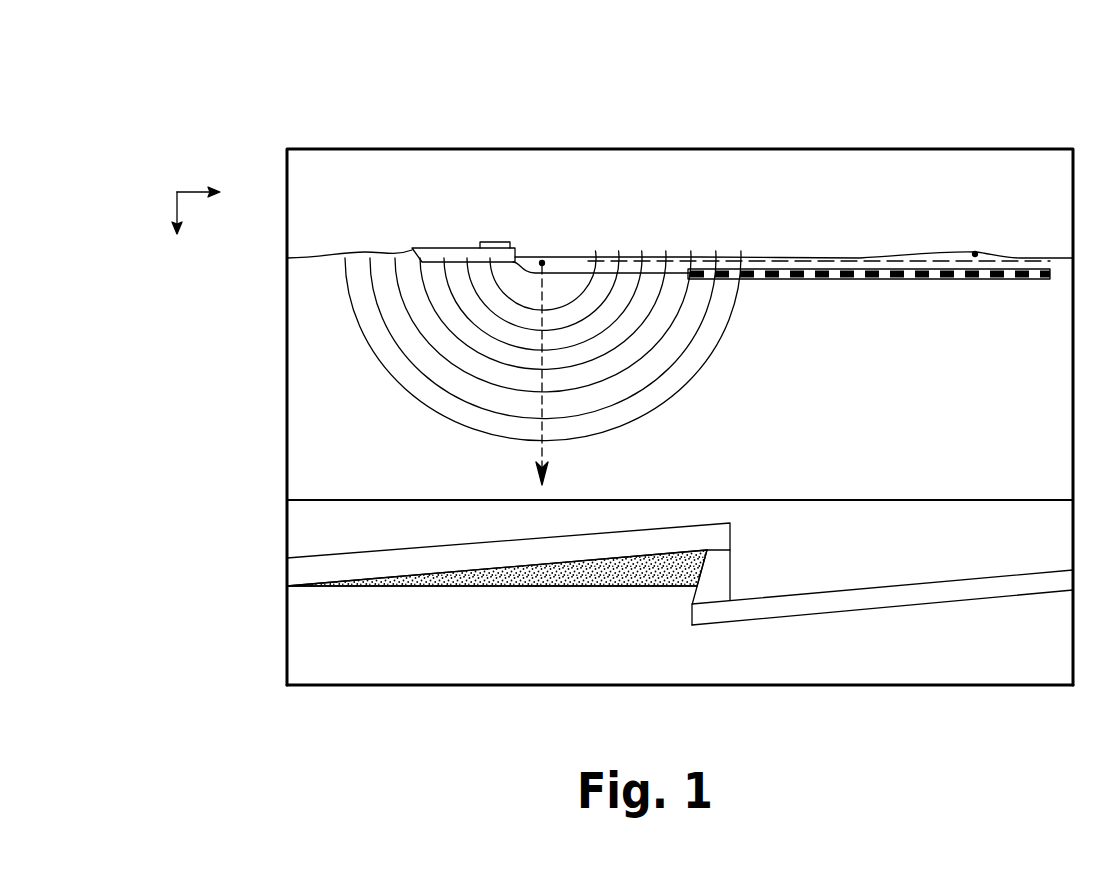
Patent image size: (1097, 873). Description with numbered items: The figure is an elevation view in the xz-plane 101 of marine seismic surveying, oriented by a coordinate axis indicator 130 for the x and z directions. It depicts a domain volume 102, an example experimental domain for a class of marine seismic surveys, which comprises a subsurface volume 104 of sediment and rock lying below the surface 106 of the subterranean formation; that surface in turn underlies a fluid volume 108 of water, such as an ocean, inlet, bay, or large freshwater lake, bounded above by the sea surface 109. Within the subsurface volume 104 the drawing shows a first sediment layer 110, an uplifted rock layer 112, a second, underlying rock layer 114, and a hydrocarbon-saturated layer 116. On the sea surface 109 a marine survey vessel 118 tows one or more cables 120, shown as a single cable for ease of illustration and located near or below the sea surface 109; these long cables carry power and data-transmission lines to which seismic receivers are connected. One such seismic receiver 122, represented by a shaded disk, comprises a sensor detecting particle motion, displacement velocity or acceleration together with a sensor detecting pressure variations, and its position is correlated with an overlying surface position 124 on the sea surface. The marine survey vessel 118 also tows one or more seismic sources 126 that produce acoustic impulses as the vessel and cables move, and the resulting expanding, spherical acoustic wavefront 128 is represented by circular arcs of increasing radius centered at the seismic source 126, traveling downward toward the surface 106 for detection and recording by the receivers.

The xz-plane 101 is at (945, 72).
The domain volume 102 is at (192, 320).
The subsurface volume 104 is at (305, 518).
The surface of the subterranean formation 106 is at (343, 500).
The fluid volume 108 is at (305, 405).
The sea surface 109 is at (812, 258).
The first sediment layer 110 is at (935, 559).
The uplifted rock layer 112 is at (305, 577).
The second, underlying rock layer 114 is at (410, 672).
The hydrocarbon-saturated layer 116 is at (506, 588).
The marine survey vessel 118 is at (455, 248).
The cables 120 is at (862, 303).
The seismic receiver 122 is at (978, 280).
The surface position 124 is at (975, 254).
The seismic source 126 is at (542, 262).
The acoustic wavefront 128 is at (705, 360).
The coordinate system 130 is at (177, 192).